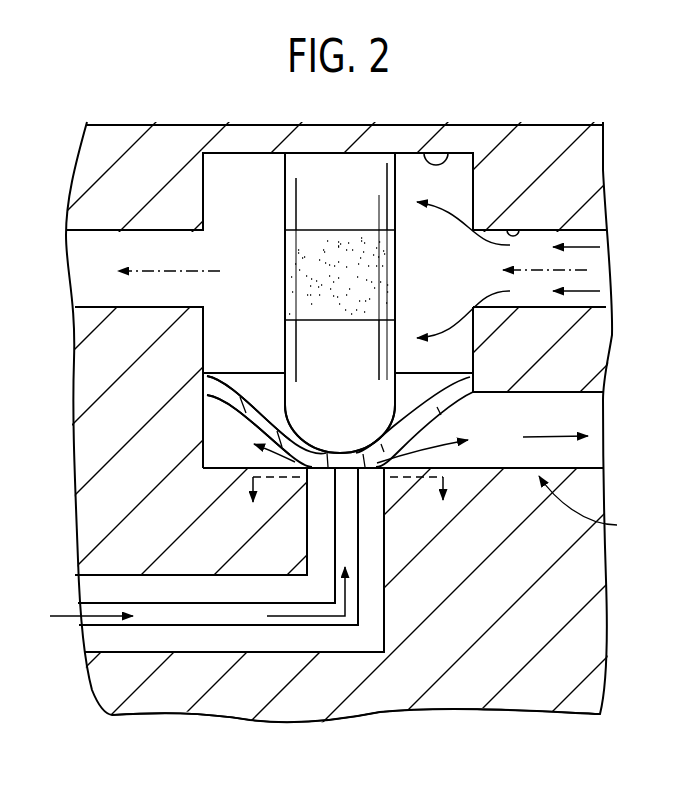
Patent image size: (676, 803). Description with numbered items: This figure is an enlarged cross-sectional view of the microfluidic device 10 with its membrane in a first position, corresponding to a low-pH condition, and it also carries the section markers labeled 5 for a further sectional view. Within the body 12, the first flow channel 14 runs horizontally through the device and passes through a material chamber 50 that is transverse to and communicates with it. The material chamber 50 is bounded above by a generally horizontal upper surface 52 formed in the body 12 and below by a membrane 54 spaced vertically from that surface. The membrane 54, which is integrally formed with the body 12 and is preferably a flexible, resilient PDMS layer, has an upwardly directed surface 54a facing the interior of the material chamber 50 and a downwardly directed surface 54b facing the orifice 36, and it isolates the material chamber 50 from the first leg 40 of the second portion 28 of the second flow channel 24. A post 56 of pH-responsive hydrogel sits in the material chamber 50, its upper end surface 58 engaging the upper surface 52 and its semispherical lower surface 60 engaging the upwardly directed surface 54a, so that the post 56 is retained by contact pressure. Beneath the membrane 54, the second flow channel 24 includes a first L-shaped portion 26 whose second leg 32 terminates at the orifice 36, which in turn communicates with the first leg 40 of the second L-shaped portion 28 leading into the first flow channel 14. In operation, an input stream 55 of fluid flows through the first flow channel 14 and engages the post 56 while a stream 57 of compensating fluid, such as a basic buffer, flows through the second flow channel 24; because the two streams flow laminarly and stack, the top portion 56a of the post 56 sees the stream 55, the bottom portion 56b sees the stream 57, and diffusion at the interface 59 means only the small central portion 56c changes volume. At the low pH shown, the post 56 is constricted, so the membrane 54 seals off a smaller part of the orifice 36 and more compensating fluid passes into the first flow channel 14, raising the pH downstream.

The microfluidic device 10 is at (245, 738).
The body 12 is at (590, 647).
The first flow channel 14 is at (525, 228).
The second flow channel 24 is at (392, 537).
The first generally L-shaped portion 26 is at (118, 661).
The second generally L-shaped portion 28 is at (423, 505).
The second leg 32 is at (308, 515).
The orifice 36 is at (298, 465).
The first leg 40 is at (590, 393).
The material chamber 50 is at (255, 225).
The upper surface 52 is at (450, 156).
The membrane 54 is at (445, 407).
The upwardly directed surface 54a is at (255, 396).
The downwardly directed surface 54b is at (240, 411).
The input stream 55 is at (600, 240).
The post 56 is at (278, 191).
The top portion 56a is at (320, 213).
The bottom portion 56b is at (322, 373).
The central portion 56c is at (307, 265).
The stream of compensating fluid 57 is at (598, 296).
The upper end surface 58 is at (372, 152).
The interface 59 is at (578, 265).
The semispherical lower surface 60 is at (305, 440).
The section line 5- 5 is at (347, 494).